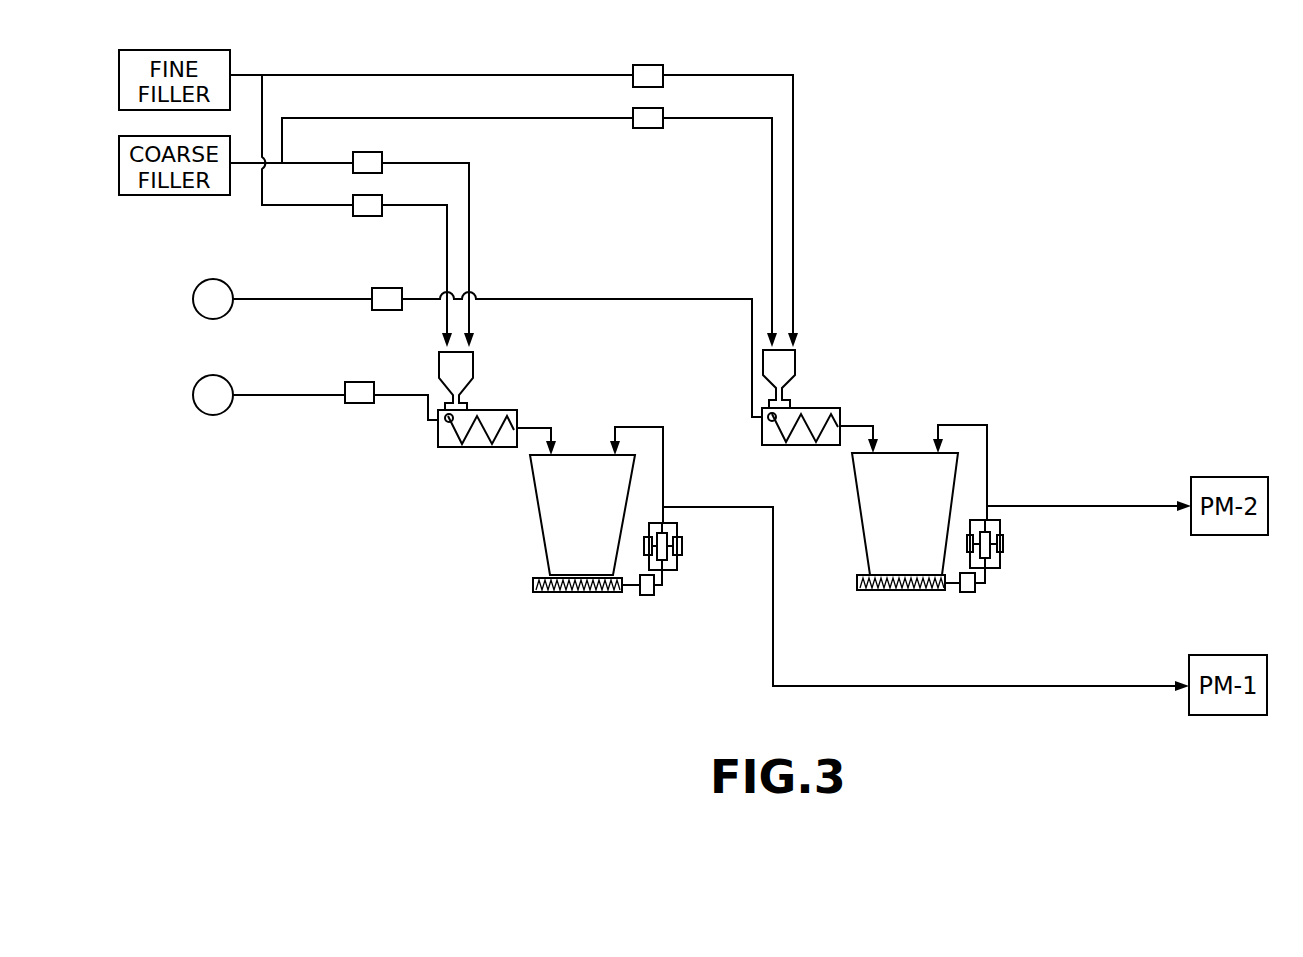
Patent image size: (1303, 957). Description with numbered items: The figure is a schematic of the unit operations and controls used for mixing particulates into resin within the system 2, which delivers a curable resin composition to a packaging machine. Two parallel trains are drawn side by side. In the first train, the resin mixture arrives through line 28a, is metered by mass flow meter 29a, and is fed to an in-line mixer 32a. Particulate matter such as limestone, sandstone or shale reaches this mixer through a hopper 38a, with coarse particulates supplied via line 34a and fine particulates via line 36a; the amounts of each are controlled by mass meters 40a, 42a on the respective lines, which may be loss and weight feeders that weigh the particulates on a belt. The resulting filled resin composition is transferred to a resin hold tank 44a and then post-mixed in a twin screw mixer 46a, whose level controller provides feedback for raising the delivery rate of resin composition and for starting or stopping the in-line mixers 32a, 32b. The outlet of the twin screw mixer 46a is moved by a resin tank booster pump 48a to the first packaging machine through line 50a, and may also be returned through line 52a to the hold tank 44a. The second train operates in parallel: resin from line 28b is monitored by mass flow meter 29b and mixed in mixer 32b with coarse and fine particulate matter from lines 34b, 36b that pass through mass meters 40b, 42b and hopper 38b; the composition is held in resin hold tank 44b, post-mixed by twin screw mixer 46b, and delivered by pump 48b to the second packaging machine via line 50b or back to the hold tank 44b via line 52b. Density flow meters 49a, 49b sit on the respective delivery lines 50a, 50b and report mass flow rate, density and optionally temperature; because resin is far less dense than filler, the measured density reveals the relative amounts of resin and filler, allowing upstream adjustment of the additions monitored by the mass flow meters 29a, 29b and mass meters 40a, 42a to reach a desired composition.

The system 2 is at (1214, 85).
The resin line 28a is at (295, 395).
The resin line 28b is at (285, 299).
The mass flow meter 29a is at (352, 403).
The mass flow meter 29b is at (380, 310).
The in-line mixer 32a is at (452, 448).
The in-line mixer 32b is at (840, 420).
The coarse particulate line 34a is at (305, 207).
The coarse particulate line 34b is at (575, 120).
The fine particulate line 36a is at (308, 163).
The fine particulate line 36b is at (572, 75).
The hopper 38a is at (473, 366).
The hopper 38b is at (795, 362).
The mass meter 40a is at (382, 196).
The mass meter 40b is at (641, 128).
The mass meter 42a is at (382, 153).
The mass meter 42b is at (648, 65).
The resin hold tank 44a is at (540, 515).
The resin hold tank 44b is at (862, 513).
The twin screw mixer 46a is at (610, 593).
The twin screw mixer 46b is at (932, 591).
The resin tank booster pump 48a is at (677, 562).
The pump 48b is at (1000, 562).
The density flow meter 49a is at (654, 592).
The density flow meter 49b is at (975, 592).
The delivery line 50a is at (773, 668).
The delivery line 50b is at (1095, 506).
The return line 52a is at (663, 482).
The return line 52b is at (987, 442).